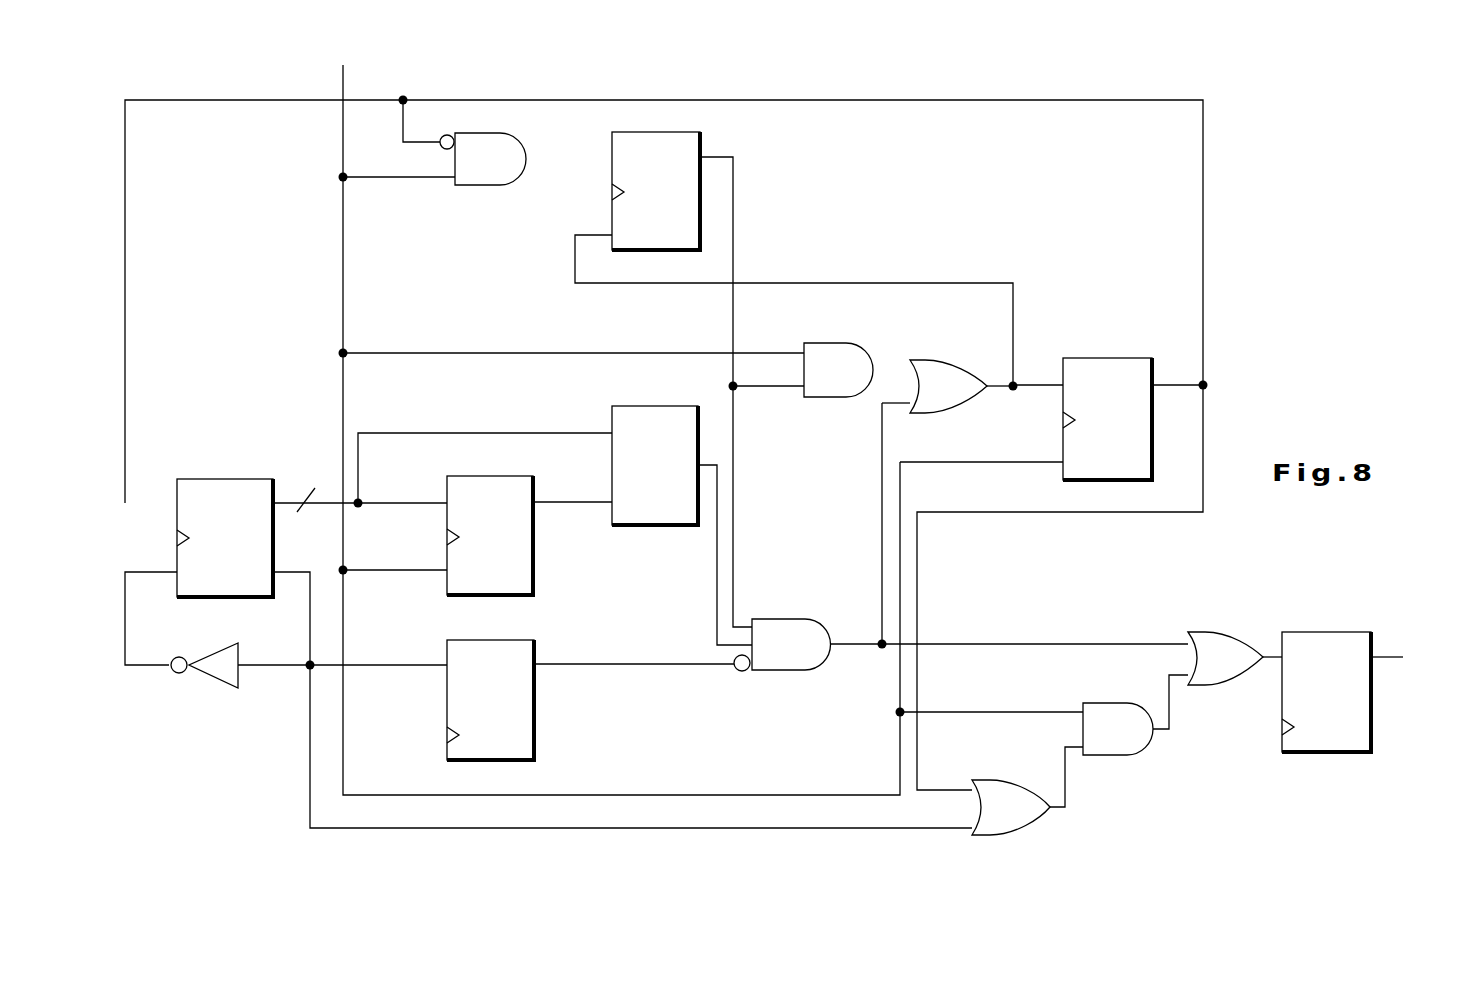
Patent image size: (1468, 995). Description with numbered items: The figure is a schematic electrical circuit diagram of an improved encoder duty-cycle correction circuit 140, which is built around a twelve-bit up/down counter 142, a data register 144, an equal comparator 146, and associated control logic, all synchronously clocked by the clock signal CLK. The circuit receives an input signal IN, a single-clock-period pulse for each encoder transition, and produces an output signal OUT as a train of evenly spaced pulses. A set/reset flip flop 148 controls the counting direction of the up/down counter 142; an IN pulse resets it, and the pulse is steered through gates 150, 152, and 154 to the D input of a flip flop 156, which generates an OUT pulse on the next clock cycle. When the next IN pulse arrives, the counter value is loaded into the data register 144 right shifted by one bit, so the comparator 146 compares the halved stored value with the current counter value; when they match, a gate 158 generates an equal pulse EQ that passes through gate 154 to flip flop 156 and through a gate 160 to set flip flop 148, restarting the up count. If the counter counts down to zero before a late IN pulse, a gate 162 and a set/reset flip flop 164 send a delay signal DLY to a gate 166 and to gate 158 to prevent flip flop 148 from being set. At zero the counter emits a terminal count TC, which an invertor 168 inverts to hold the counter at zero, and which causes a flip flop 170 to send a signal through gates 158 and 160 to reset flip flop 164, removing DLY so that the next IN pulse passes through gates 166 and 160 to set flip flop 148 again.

The duty-cycle correction circuit 140 is at (240, 778).
The up/down counter 142 is at (240, 597).
The data register 144 is at (512, 595).
The equal comparator 146 is at (660, 525).
The set/reset flip flop 148 is at (1113, 358).
The gate 150 is at (1035, 835).
The gate 152 is at (1133, 755).
The gate 154 is at (1240, 632).
The flip flop 156 is at (1325, 632).
The gate 158 is at (795, 670).
The gate 160 is at (950, 360).
The gate 162 is at (500, 185).
The set/reset flip flop 164 is at (700, 218).
The gate 166 is at (822, 397).
The invertor 168 is at (205, 690).
The flip flop 170 is at (534, 725).